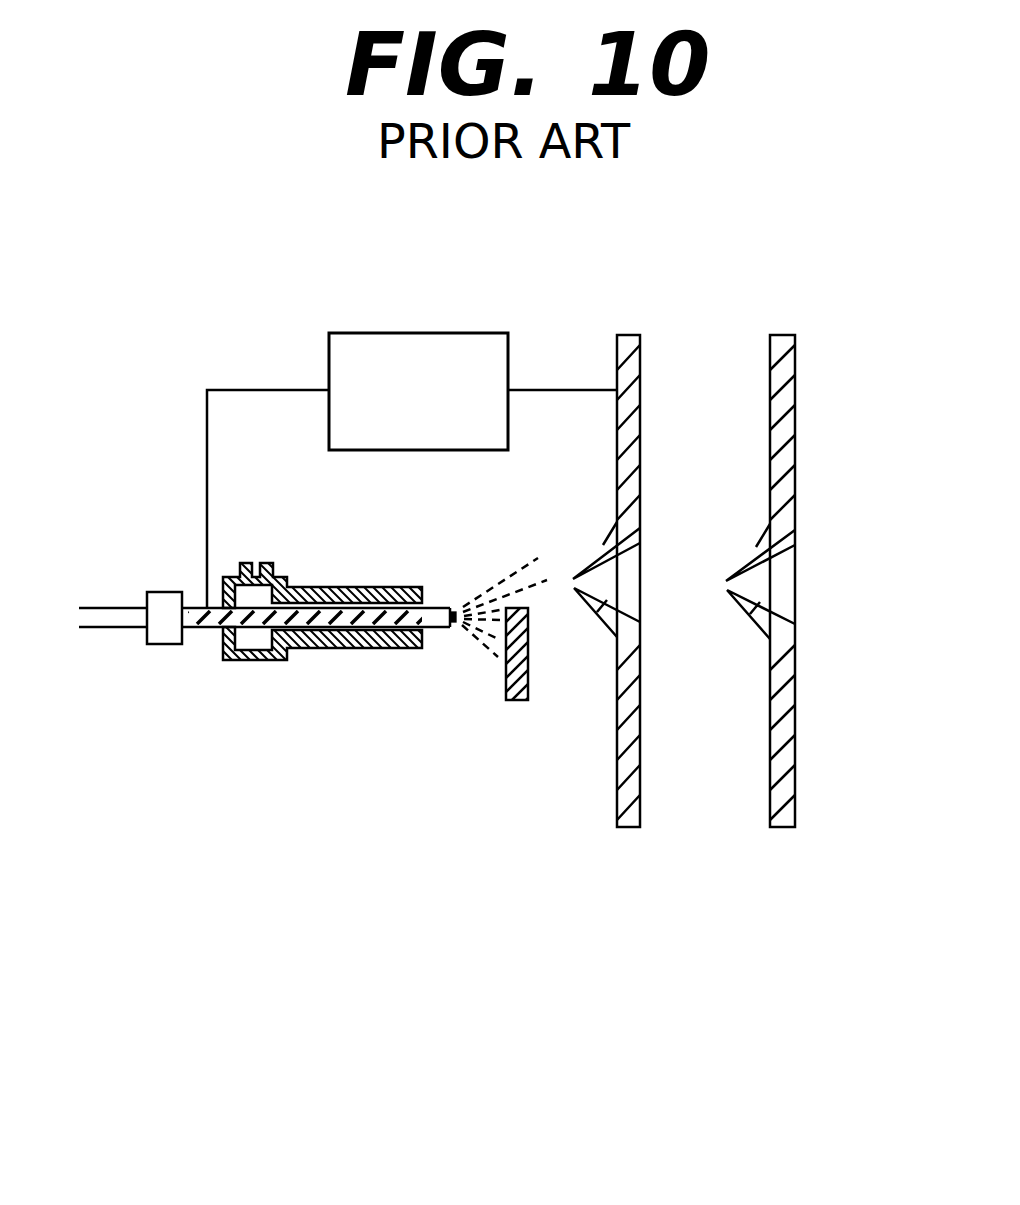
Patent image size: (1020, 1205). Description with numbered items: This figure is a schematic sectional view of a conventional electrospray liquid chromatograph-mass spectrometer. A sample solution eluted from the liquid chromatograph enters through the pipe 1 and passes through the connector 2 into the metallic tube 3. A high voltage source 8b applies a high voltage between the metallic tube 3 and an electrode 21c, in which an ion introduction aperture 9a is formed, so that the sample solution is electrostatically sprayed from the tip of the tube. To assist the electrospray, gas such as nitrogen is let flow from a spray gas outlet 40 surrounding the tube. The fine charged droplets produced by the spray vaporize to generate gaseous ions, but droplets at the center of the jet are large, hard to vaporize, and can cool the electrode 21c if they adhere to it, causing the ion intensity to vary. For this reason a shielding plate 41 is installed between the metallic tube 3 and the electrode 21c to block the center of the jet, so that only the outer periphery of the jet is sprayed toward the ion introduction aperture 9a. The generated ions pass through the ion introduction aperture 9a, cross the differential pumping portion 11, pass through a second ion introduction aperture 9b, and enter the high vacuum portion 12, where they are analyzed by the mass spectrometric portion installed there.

The pipe 1 is at (113, 627).
The connector 2 is at (168, 644).
The metallic tube 3 is at (338, 620).
The high voltage source 8b is at (450, 340).
The ion introduction aperture 9a is at (573, 580).
The ion introduction aperture 9b is at (730, 583).
The differential pumping portion 11 is at (700, 762).
The high vacuum portion 12 is at (855, 762).
The electrode 21c is at (618, 798).
The spray gas outlet 40 is at (425, 603).
The shielding plate 41 is at (511, 700).